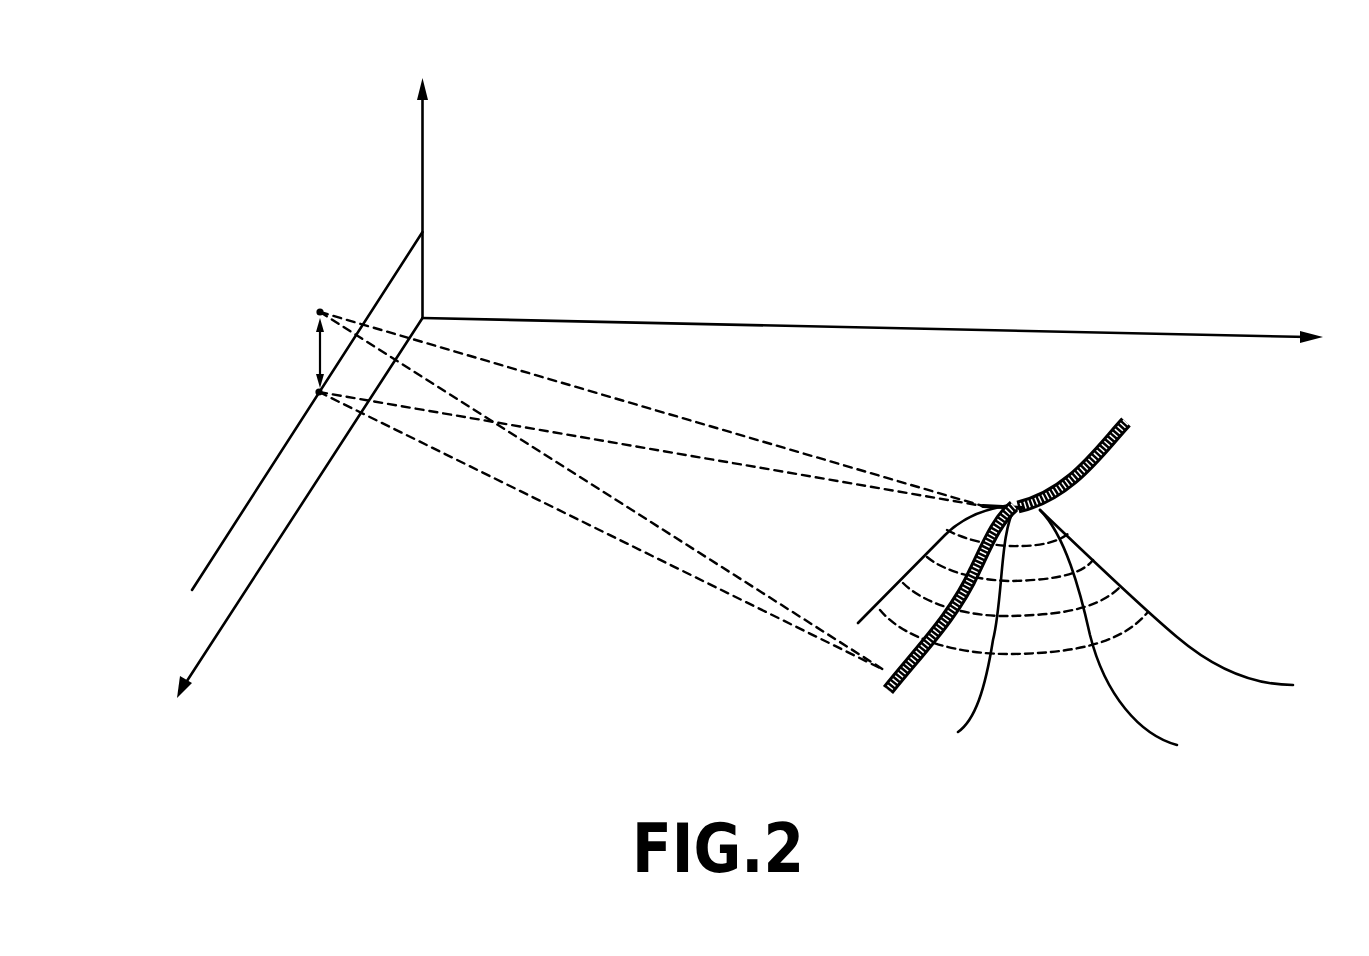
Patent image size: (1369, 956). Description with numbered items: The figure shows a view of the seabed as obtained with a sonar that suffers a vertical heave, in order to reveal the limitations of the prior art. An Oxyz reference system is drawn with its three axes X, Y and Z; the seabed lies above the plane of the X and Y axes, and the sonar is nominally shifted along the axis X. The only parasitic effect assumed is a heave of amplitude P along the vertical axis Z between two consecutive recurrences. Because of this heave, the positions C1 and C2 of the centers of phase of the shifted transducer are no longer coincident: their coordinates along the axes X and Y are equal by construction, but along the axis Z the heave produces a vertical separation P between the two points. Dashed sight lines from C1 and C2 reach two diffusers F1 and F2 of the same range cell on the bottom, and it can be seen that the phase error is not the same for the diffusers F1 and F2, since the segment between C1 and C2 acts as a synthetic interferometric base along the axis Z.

The Ox axis X is at (291, 526).
The Oy axis Y is at (889, 336).
The Oz axis Z is at (436, 198).
The first center of phase position C1 is at (331, 415).
The second center of phase position C2 is at (336, 292).
The heave amplitude P is at (307, 353).
The first diffuser F1 is at (951, 611).
The second diffuser F2 is at (1054, 465).